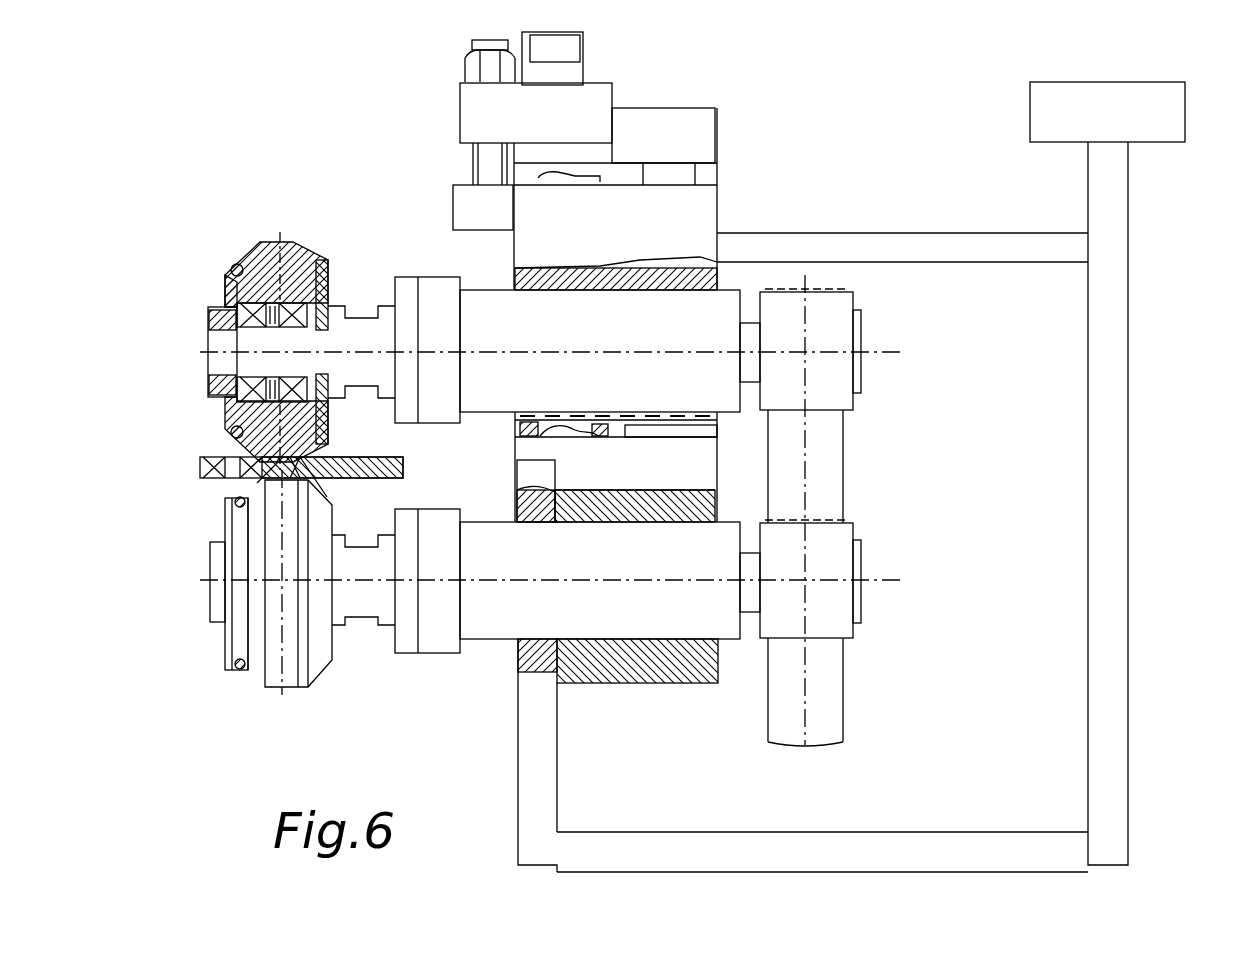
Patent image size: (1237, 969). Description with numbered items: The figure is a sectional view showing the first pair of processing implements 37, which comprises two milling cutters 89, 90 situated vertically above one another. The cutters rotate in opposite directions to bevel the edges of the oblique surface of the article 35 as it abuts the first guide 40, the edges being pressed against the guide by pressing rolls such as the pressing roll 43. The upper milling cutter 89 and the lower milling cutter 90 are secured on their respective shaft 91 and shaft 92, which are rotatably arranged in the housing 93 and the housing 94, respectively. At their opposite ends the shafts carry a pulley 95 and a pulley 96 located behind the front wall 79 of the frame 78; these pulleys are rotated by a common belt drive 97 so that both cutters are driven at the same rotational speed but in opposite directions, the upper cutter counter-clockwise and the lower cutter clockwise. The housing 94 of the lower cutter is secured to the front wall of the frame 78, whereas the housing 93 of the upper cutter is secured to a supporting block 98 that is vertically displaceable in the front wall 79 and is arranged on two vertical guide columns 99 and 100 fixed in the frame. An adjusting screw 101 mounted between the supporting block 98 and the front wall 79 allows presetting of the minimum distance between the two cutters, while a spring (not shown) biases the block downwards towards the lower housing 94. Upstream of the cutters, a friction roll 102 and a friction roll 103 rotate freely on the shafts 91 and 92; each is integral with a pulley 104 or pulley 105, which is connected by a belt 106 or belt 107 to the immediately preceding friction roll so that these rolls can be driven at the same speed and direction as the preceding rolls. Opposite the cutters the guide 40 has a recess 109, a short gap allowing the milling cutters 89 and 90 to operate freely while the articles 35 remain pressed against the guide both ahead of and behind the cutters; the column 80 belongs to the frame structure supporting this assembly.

The article 35 is at (234, 501).
The first pair of processing implements 37 is at (253, 250).
The first guide 40 is at (378, 448).
The pressing roll 43 is at (200, 468).
The frame 78 is at (558, 810).
The front wall 79 is at (535, 778).
The upright column 80 is at (1108, 707).
The upper milling cutter 89 is at (330, 292).
The lower milling cutter 90 is at (320, 663).
The shaft 91 is at (320, 363).
The shaft 92 is at (748, 598).
The housing 93 is at (712, 318).
The housing 94 is at (657, 625).
The pulley 95 is at (830, 322).
The pulley 96 is at (830, 556).
The common belt drive 97 is at (828, 490).
The supporting block 98 is at (695, 215).
The vertical guide column 99 is at (560, 174).
The vertical guide column 100 is at (670, 178).
The adjusting screw 101 is at (476, 168).
The friction roll 102 is at (243, 292).
The friction roll 103 is at (258, 655).
The pulley 104 is at (228, 282).
The pulley 105 is at (237, 640).
The belt 106 is at (234, 268).
The belt 107 is at (240, 670).
The recess 109 is at (317, 478).